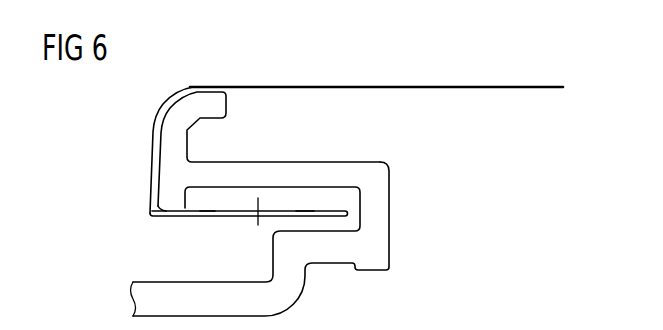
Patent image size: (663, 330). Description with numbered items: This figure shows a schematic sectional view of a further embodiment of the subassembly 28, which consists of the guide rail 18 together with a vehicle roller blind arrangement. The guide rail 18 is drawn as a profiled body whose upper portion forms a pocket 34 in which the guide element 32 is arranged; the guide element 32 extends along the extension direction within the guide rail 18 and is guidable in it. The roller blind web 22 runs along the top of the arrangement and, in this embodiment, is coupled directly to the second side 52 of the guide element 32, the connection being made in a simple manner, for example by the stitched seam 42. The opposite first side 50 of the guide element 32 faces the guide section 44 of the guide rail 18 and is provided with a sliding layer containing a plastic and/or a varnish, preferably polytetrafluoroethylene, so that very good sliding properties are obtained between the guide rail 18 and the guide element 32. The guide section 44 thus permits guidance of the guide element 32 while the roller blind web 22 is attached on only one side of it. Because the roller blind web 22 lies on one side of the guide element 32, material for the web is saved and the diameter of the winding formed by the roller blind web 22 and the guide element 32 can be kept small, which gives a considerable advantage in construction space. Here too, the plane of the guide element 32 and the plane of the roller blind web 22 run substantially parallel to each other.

The guide rail 18 is at (380, 253).
The roller blind web 22 is at (482, 86).
The subassembly 28 is at (546, 162).
The guide element 32 is at (193, 214).
The pocket 34 is at (355, 224).
The stitched seam 42 is at (248, 214).
The guide section 44 is at (151, 203).
The first side 50 is at (304, 211).
The second side 52 is at (207, 214).